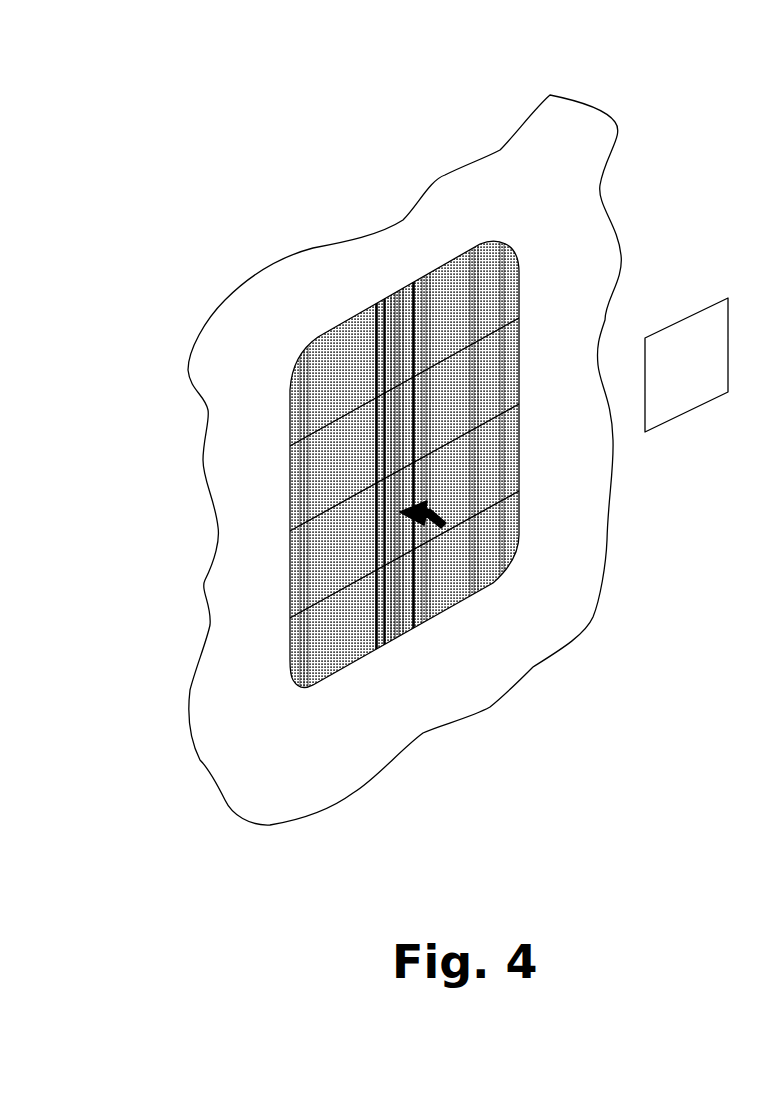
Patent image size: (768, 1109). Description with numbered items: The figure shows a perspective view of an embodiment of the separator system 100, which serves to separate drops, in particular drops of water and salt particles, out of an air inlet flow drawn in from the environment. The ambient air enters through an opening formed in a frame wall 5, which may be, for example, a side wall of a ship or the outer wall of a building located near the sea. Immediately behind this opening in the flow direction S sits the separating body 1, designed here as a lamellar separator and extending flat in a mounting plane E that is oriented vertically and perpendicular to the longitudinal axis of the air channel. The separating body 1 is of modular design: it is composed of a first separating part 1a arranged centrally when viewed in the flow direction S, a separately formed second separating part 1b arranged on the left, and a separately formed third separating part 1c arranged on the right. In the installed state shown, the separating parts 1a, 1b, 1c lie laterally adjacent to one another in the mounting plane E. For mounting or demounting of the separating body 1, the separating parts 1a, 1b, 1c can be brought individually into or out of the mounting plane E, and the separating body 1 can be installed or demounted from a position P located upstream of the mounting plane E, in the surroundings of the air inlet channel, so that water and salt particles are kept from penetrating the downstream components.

The separator system 100 is at (476, 449).
The frame wall 5 is at (580, 147).
The separating body 1 is at (422, 489).
The first separating part 1a is at (400, 622).
The second separating part 1b is at (333, 655).
The third separating part 1c is at (462, 578).
The flow direction S is at (438, 530).
The mounting plane E is at (678, 357).
The position P is at (704, 412).